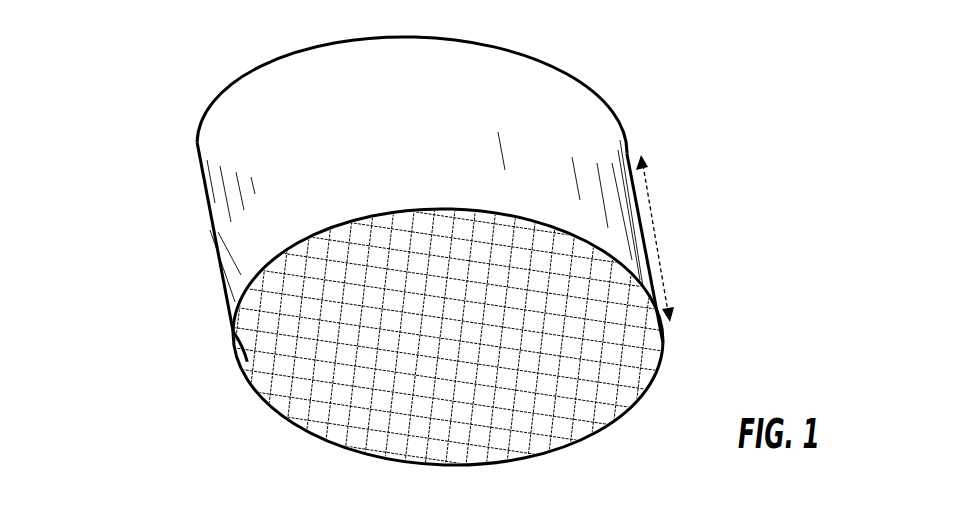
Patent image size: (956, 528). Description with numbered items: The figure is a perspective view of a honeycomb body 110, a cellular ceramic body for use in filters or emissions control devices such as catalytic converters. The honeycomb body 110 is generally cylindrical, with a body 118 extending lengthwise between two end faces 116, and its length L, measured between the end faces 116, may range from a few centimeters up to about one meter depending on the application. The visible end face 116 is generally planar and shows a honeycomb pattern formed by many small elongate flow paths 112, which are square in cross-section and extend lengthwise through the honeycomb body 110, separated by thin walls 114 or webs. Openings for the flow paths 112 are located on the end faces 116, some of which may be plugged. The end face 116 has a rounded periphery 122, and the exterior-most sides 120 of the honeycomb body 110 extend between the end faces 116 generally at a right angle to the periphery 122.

The honeycomb body 110 is at (146, 151).
The flow paths 112 is at (303, 413).
The walls 114 is at (292, 314).
The end face 116 is at (632, 372).
The body 118 is at (565, 176).
The exterior-most sides 120 is at (418, 157).
The periphery 122 is at (489, 456).
The length L is at (656, 238).